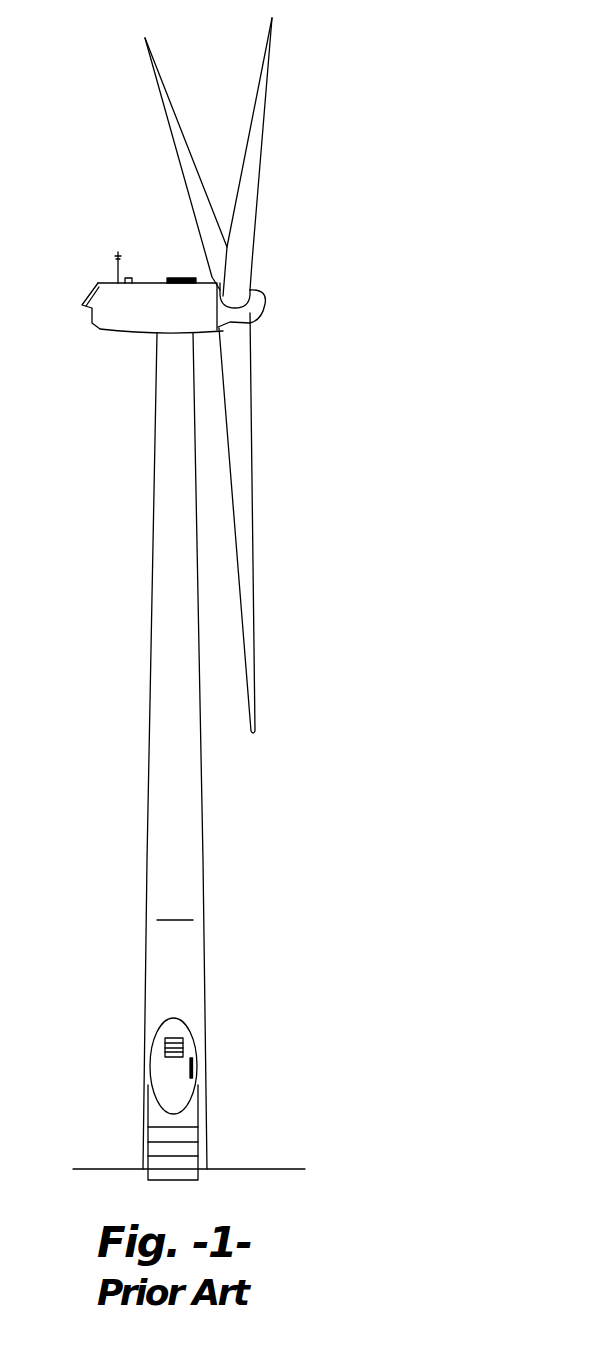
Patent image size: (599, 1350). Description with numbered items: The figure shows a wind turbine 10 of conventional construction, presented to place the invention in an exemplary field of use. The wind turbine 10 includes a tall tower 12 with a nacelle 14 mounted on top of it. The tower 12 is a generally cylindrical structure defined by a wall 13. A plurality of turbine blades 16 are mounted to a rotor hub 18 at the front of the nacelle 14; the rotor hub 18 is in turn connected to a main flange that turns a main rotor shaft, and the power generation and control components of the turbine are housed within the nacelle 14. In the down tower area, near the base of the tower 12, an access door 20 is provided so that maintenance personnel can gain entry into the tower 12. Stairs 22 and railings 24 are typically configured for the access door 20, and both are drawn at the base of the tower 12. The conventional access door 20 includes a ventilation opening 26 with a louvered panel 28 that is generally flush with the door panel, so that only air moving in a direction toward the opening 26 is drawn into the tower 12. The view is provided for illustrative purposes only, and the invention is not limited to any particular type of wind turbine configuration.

The wind turbine 10 is at (408, 117).
The tower 12 is at (182, 807).
The wall 13 is at (175, 910).
The nacelle 14 is at (122, 312).
The turbine blades 16 is at (245, 444).
The rotor hub 18 is at (253, 304).
The access door 20 is at (188, 1050).
The stairs 22 is at (183, 1157).
The railings 24 is at (148, 1112).
The ventilation opening 26 is at (192, 1032).
The louvered panel 28 is at (167, 1042).